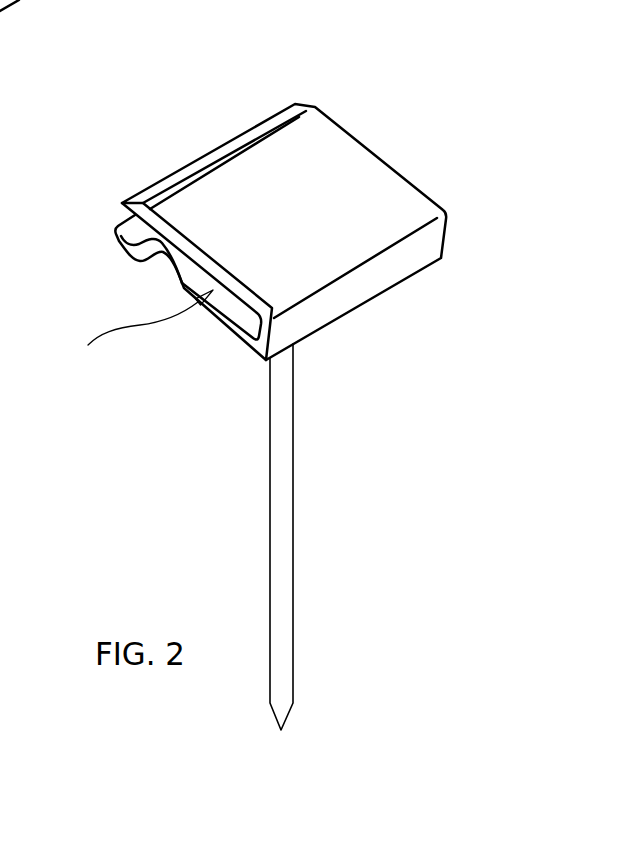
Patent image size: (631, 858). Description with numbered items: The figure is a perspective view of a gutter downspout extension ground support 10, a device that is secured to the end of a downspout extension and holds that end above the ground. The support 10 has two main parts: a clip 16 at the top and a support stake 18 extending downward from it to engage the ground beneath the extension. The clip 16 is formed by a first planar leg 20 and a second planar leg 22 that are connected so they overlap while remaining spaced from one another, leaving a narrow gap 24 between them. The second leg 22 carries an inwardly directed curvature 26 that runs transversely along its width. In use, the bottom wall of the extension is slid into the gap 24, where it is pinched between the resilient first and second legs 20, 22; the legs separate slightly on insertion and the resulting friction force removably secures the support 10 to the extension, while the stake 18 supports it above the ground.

The gutter downspout extension ground support 10 is at (245, 371).
The clip 16 is at (342, 132).
The support stake 18 is at (293, 508).
The first planar leg 20 is at (257, 173).
The second planar leg 22 is at (207, 315).
The narrow gap 24 is at (144, 334).
The inwardly directed curvature 26 is at (167, 258).